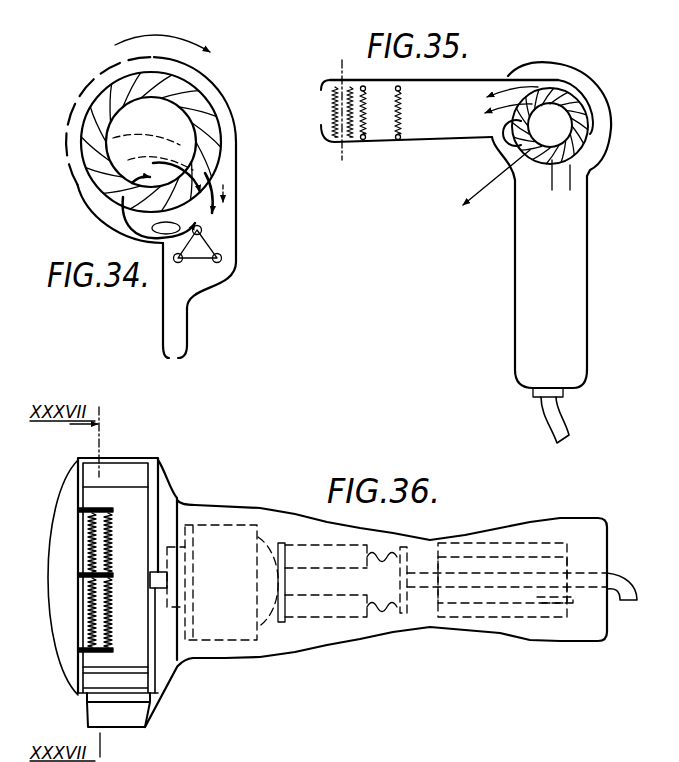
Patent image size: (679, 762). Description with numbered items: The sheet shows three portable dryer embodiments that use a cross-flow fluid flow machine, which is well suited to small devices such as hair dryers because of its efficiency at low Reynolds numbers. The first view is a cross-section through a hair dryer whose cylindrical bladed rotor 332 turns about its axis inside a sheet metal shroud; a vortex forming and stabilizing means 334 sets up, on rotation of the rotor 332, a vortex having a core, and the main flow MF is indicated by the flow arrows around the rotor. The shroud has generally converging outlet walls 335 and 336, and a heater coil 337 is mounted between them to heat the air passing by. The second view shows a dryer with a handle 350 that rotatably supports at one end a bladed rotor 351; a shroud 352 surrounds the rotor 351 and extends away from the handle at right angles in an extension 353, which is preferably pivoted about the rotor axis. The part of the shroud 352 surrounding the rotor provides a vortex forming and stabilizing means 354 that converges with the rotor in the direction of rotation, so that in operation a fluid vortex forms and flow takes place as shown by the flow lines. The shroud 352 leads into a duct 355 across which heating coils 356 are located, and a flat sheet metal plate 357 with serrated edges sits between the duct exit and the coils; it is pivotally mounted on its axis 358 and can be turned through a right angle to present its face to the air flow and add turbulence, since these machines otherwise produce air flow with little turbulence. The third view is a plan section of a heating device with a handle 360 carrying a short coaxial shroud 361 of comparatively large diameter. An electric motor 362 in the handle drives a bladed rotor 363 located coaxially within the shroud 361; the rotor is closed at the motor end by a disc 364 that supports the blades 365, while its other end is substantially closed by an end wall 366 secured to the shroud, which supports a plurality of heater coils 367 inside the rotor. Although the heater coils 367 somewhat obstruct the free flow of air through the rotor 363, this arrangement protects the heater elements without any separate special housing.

In FIG. 34, the cylindrical bladed rotor 332 is at (172, 92).
In FIG. 34, the vortex forming and stabilizing means 334 is at (163, 245).
In FIG. 34, the converging outlet wall 335 is at (188, 308).
In FIG. 34, the converging outlet wall 336 is at (163, 318).
In FIG. 34, the heater coil 337 is at (220, 248).
In FIG. 34, the main flow MF is at (217, 217).
In FIG. 35, the handle 350 is at (540, 275).
In FIG. 35, the bladed rotor 351 is at (590, 133).
In FIG. 35, the shroud 352 is at (573, 92).
In FIG. 35, the extension 353 is at (455, 141).
In FIG. 35, the vortex forming and stabilizing means 354 is at (517, 160).
In FIG. 35, the duct 355 is at (450, 100).
In FIG. 35, the heating coils 356 is at (363, 142).
In FIG. 35, the flat sheet metal plate 357 is at (338, 140).
In FIG. 35, the axis 358 is at (348, 52).
In FIG. 36, the handle 360 is at (573, 503).
In FIG. 36, the shroud 361 is at (150, 460).
In FIG. 36, the electric motor 362 is at (233, 527).
In FIG. 36, the bladed rotor 363 is at (118, 472).
In FIG. 36, the disc 364 is at (153, 488).
In FIG. 36, the blades 365 is at (120, 690).
In FIG. 36, the end wall 366 is at (85, 667).
In FIG. 36, the heater coils 367 is at (90, 610).